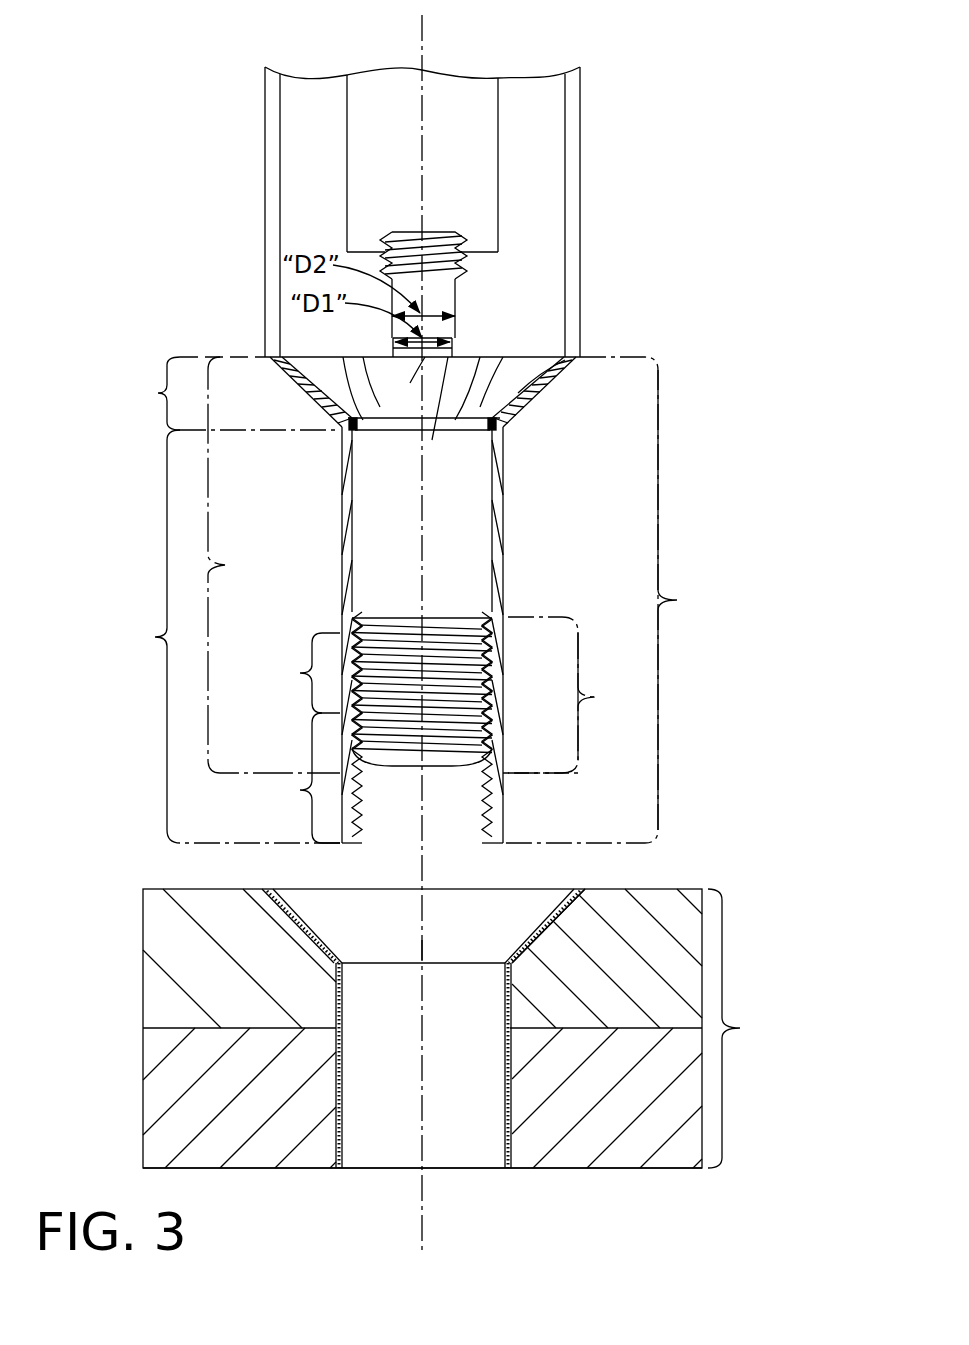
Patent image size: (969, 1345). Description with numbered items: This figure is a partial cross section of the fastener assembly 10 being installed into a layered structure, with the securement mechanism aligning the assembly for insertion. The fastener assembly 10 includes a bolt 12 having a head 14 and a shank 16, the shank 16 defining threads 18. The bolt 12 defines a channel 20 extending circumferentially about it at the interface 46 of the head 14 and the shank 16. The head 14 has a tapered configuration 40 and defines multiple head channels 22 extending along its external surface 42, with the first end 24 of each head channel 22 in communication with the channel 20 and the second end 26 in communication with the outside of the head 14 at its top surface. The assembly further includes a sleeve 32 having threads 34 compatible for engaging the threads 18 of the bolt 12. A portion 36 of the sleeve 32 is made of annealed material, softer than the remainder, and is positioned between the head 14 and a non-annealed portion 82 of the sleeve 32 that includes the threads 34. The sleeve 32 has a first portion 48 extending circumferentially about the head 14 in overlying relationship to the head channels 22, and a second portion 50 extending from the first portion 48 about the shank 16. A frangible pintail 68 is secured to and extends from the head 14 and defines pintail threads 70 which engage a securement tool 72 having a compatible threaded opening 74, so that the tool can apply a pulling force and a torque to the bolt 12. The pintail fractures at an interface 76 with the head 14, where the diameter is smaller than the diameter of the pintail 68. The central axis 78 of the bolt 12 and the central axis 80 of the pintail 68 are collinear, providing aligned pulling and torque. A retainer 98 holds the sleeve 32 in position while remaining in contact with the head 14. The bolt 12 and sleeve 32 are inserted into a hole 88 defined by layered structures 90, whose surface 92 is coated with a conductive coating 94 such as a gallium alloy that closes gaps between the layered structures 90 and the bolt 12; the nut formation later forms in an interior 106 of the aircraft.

The fastener assembly 10 is at (677, 600).
The bolt 12 is at (225, 565).
The head 14 is at (350, 432).
The shank 16 is at (455, 550).
The threads 18 is at (597, 697).
The channel 20 is at (518, 393).
The head channels 22 is at (342, 375).
The first end 24 is at (462, 438).
The second end 26 is at (350, 355).
The sleeve 32 is at (513, 418).
The threads 34 is at (485, 800).
The portion 36 is at (300, 675).
The tapered configuration 40 is at (523, 412).
The external surface 42 is at (410, 383).
The interface 46 is at (530, 358).
The first portion 48 is at (158, 393).
The second portion 50 is at (155, 637).
The frangible pintail 68 is at (458, 293).
The pintail threads 70 is at (429, 221).
The securement tool 72 is at (449, 105).
The threaded opening 74 is at (473, 230).
The interface 76 is at (390, 350).
The central axis 78 is at (425, 948).
The central axis 80 is at (424, 42).
The non-annealed portion 82 is at (300, 790).
The hole 88 is at (520, 927).
The layered structures 90 is at (740, 1028).
The surface 92 is at (330, 1002).
The conductive coating 94 is at (303, 925).
The retainer 98 is at (572, 140).
The interior 106 is at (532, 1220).